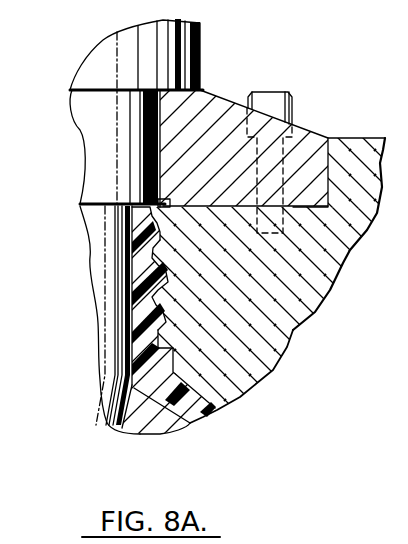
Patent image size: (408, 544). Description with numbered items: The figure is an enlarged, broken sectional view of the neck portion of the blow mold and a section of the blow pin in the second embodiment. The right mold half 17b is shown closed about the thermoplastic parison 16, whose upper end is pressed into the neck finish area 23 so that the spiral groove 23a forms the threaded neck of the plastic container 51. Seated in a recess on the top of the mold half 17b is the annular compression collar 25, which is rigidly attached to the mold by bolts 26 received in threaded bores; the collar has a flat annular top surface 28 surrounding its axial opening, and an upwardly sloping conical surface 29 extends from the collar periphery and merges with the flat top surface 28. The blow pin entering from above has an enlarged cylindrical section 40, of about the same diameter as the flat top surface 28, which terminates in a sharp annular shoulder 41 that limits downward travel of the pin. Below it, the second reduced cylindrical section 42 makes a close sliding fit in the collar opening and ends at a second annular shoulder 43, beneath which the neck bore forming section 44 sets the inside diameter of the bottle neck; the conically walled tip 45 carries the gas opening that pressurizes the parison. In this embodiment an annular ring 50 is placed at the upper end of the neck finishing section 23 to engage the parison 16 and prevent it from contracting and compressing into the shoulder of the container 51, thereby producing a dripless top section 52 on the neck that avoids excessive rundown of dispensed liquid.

The thermoplastic parison 16 is at (165, 366).
The mold half 17b is at (317, 273).
The neck finish area 23 is at (178, 288).
The spiral groove 23a is at (167, 310).
The annular compression collar 25 is at (306, 106).
The bolts 26 is at (272, 92).
The flat annular top surface 28 is at (180, 108).
The upwardly sloping conical surface 29 is at (307, 137).
The enlarged cylindrical section 40 is at (200, 42).
The annular shoulder 41 is at (97, 97).
The second reduced sized cylindrical section 42 is at (107, 152).
The second annular shoulder 43 is at (103, 208).
The neck bore forming section 44 is at (105, 297).
The tip 45 is at (113, 400).
The annular ring 50 is at (150, 223).
The plastic container 51 is at (182, 420).
The dripless top section 52 is at (165, 207).